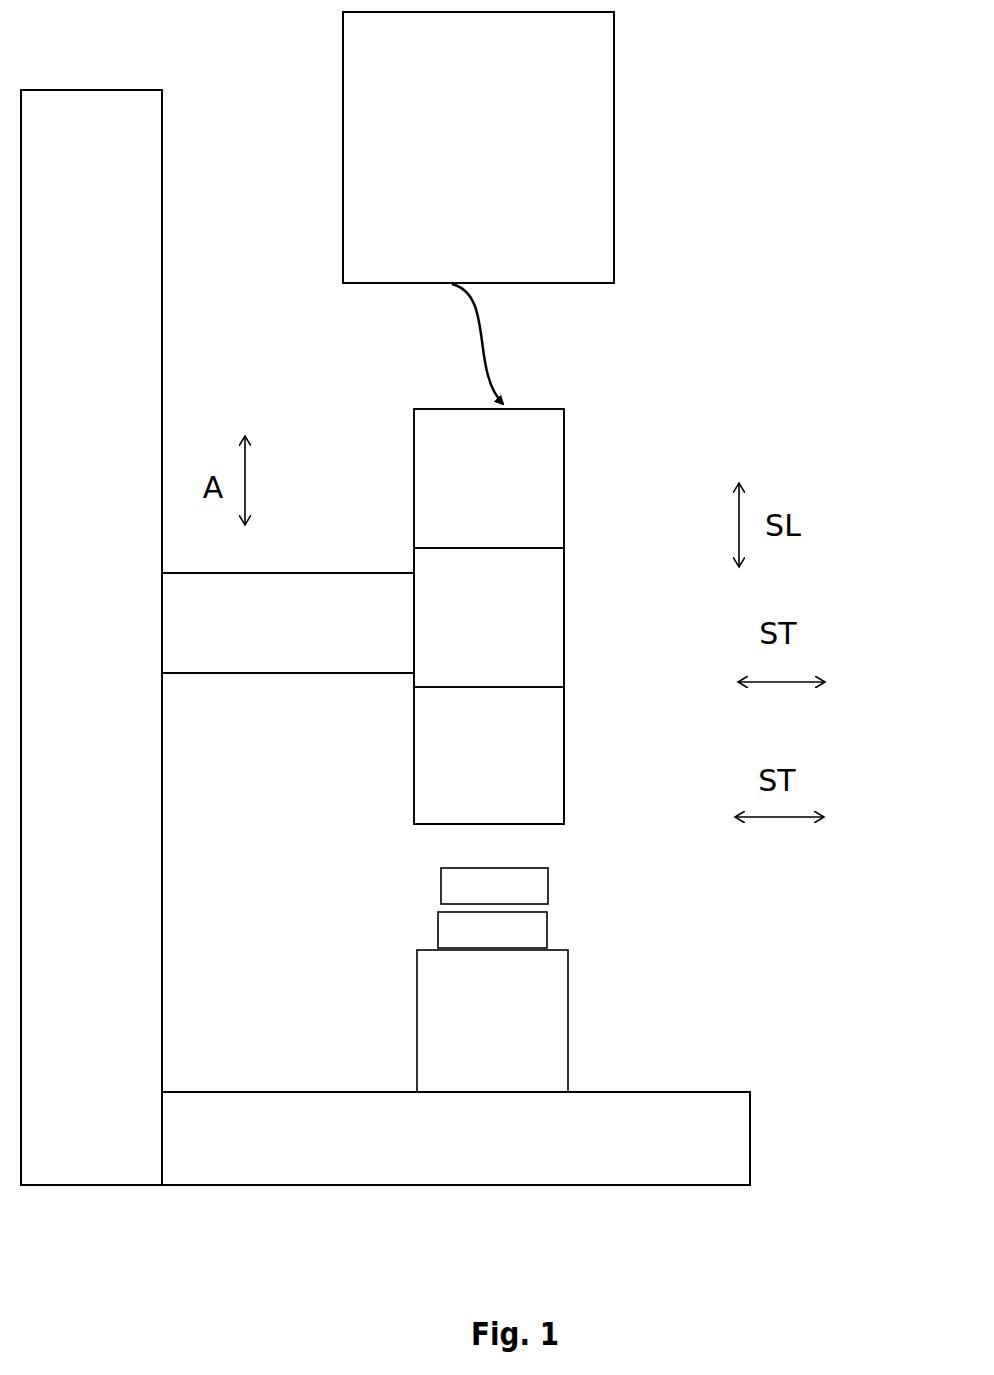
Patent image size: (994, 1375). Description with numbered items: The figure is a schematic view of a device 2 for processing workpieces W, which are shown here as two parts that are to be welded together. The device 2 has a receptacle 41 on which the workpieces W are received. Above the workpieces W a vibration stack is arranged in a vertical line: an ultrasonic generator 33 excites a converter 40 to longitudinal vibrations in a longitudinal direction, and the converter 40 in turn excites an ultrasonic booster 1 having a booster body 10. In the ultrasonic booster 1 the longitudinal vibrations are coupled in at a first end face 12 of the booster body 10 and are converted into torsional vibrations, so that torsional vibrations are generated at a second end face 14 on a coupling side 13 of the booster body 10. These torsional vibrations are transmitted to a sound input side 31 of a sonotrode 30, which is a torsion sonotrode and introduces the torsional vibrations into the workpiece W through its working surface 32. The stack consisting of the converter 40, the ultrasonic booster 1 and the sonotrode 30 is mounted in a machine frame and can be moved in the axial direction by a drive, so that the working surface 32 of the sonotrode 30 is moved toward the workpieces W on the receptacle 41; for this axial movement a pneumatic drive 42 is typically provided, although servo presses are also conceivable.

The ultrasonic booster 1 is at (567, 595).
The device 2 is at (792, 290).
The booster body 10 is at (489, 617).
The first end face 12 is at (479, 546).
The coupling side 13 is at (410, 688).
The second end face 14 is at (532, 687).
The sonotrode 30 is at (489, 755).
The sound input side 31 is at (552, 688).
The working surface 32 is at (442, 827).
The ultrasonic generator 33 is at (478, 147).
The converter 40 is at (489, 478).
The receptacle 41 is at (492, 1021).
The pneumatic drive 42 is at (91, 637).
The workpieces W is at (493, 908).